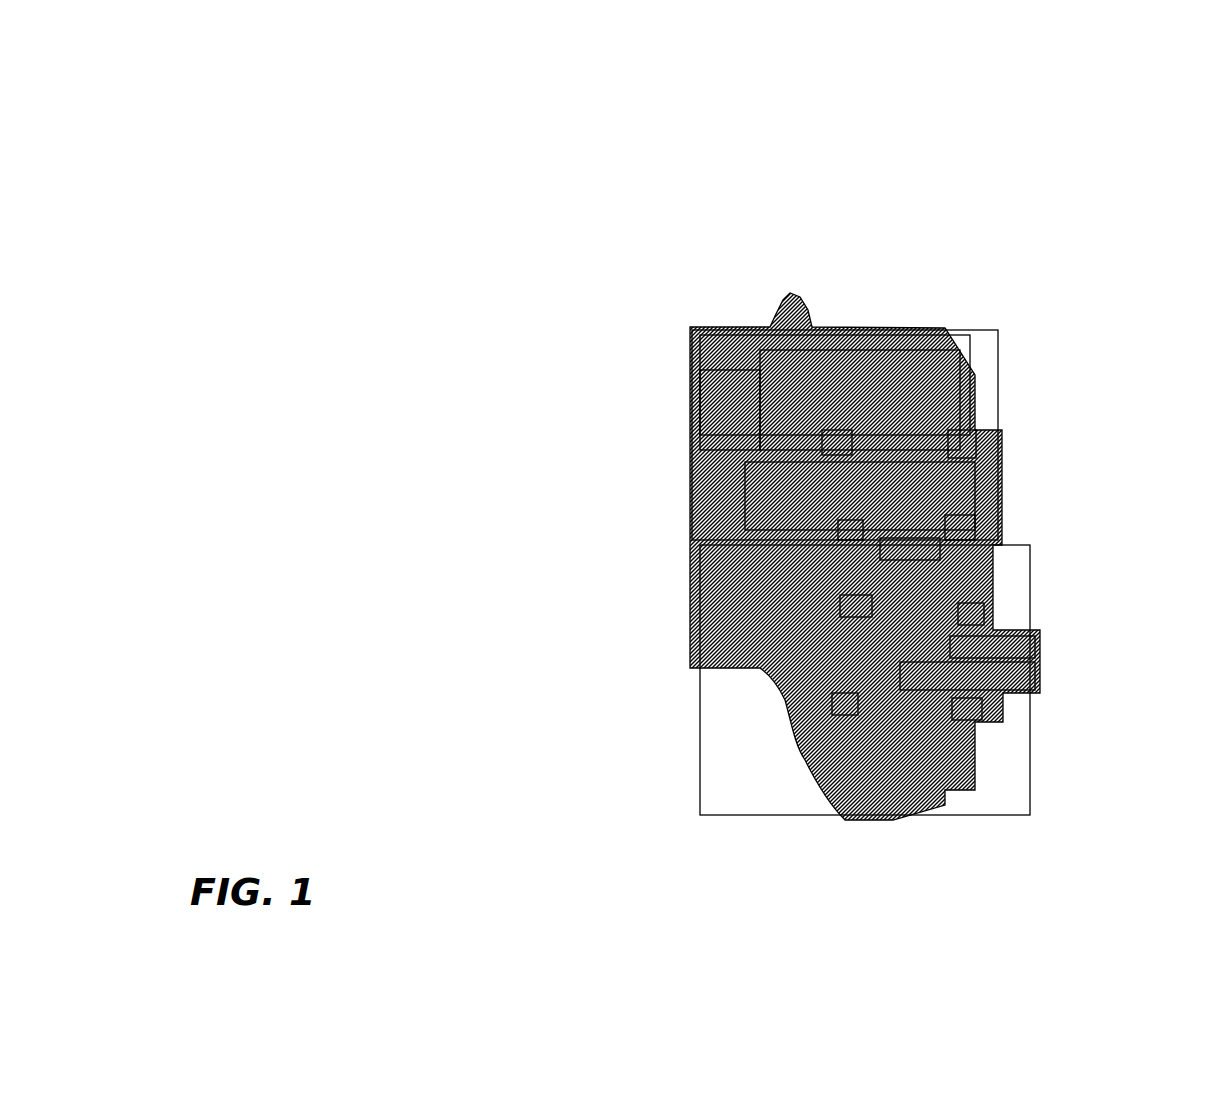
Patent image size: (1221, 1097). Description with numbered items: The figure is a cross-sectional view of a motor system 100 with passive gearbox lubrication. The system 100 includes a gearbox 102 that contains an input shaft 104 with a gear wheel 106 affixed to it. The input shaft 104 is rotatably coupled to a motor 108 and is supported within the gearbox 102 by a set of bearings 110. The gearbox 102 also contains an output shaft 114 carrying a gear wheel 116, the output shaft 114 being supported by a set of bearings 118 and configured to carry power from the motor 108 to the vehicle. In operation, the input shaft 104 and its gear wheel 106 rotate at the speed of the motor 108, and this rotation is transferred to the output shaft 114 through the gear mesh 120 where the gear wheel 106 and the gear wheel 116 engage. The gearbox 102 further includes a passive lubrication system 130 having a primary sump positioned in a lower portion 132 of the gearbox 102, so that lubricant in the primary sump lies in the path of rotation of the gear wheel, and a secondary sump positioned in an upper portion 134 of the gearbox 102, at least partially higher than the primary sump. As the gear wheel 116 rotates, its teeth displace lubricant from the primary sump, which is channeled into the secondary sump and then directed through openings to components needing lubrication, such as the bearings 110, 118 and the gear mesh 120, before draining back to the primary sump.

The system 100 is at (522, 140).
The gearbox 102 is at (866, 330).
The input shaft 104 is at (930, 492).
The gear wheel 106 is at (905, 457).
The motor 108 is at (722, 445).
The bearings 110 is at (836, 440).
The output shaft 114 is at (960, 660).
The gear wheel 116 is at (918, 692).
The bearings 118 is at (845, 605).
The gear mesh 120 is at (912, 547).
The passive lubrication system 130 is at (1096, 266).
The lower portion 132 is at (790, 792).
The upper portion 134 is at (1032, 339).